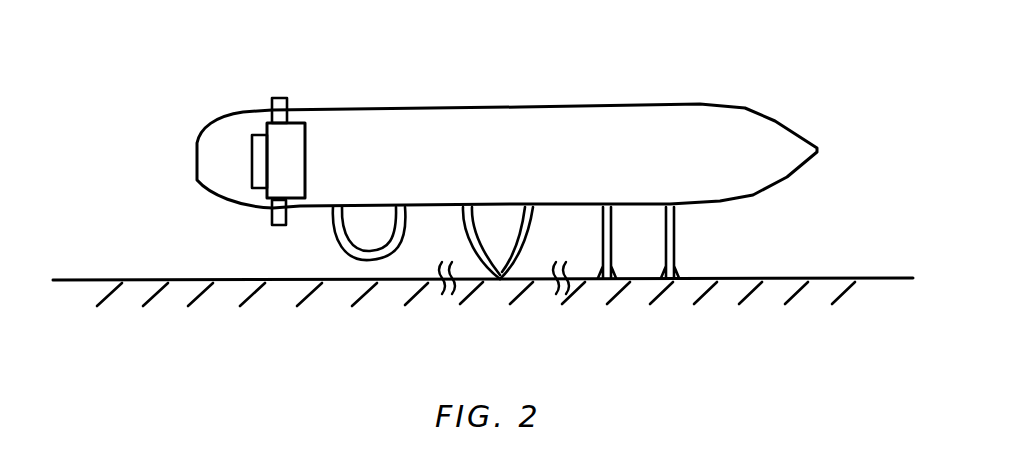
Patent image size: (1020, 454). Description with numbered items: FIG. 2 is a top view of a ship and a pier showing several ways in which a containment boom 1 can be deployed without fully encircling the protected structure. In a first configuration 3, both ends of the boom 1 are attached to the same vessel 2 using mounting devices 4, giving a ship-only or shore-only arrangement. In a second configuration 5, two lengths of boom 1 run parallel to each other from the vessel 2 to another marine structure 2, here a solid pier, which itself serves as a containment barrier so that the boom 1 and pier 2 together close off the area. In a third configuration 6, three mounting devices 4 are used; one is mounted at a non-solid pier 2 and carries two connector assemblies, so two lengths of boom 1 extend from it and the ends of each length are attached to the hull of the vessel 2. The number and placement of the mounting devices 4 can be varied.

The containment boom 1 is at (678, 232).
The vessel 2 is at (618, 107).
The first configuration 3 is at (380, 311).
The mounting device 4 is at (338, 213).
The second configuration 5 is at (662, 284).
The third configuration 6 is at (533, 313).